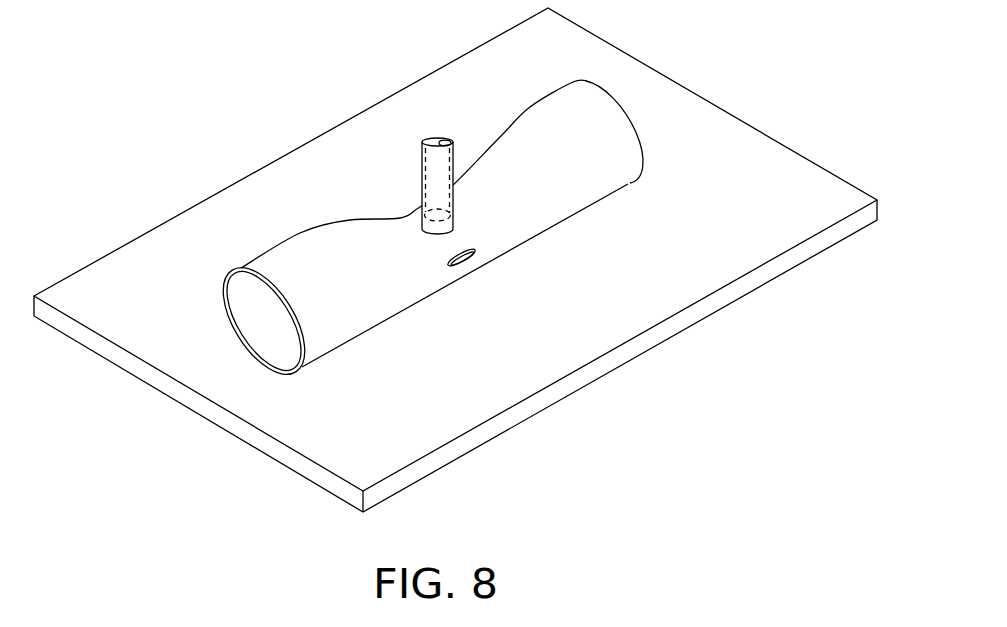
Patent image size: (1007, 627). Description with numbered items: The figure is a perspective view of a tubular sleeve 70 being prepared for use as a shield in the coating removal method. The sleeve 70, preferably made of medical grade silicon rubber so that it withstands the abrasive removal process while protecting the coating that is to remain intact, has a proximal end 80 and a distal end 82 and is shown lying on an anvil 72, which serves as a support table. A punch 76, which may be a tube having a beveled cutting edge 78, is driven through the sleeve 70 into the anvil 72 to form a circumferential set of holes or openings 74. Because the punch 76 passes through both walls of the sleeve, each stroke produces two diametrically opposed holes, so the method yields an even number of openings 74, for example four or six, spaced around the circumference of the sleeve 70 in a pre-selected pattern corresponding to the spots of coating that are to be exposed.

The tubular sleeve 70 is at (432, 202).
The anvil 72 is at (725, 127).
The openings 74 is at (465, 266).
The punch 76 is at (410, 206).
The beveled cutting edge 78 is at (435, 230).
The proximal end 80 is at (257, 318).
The distal end 82 is at (610, 88).